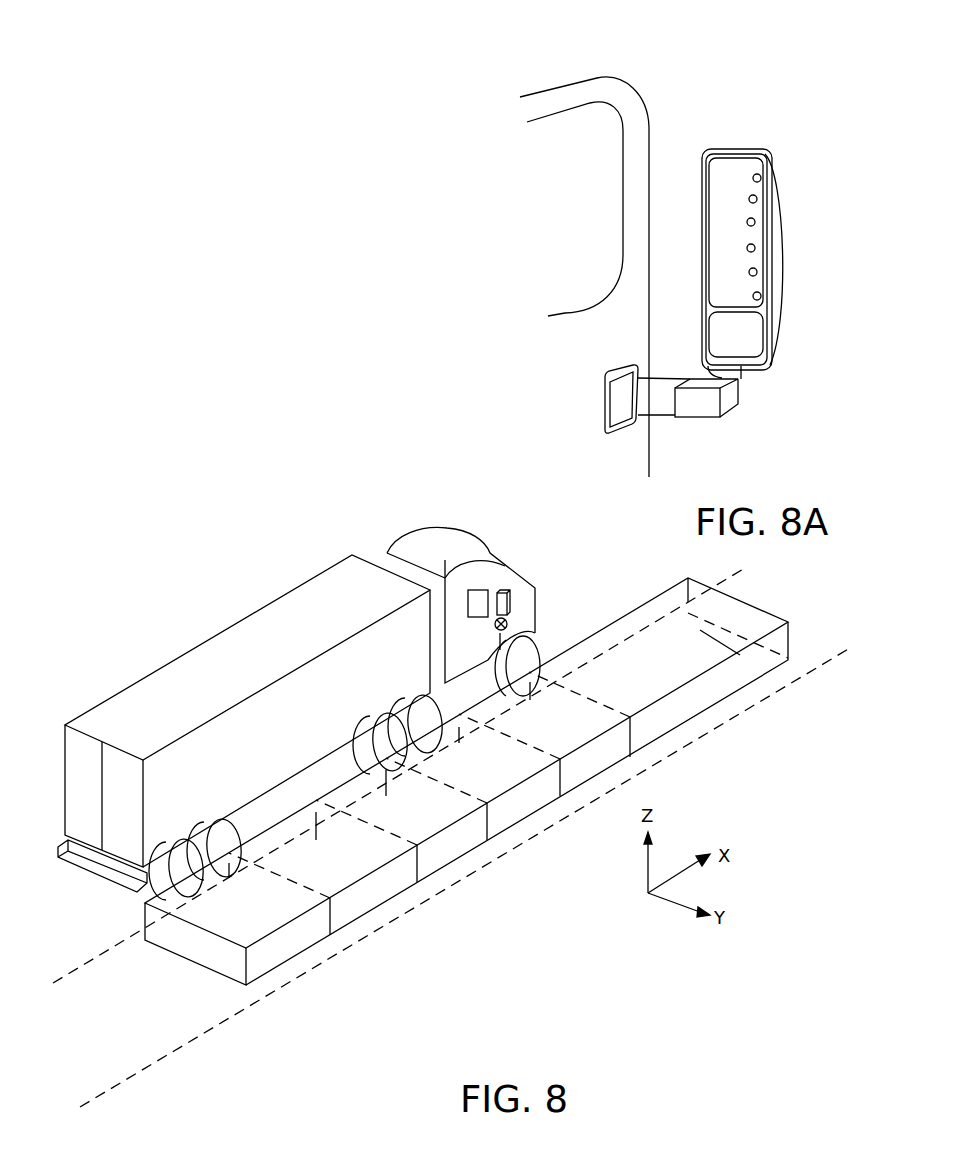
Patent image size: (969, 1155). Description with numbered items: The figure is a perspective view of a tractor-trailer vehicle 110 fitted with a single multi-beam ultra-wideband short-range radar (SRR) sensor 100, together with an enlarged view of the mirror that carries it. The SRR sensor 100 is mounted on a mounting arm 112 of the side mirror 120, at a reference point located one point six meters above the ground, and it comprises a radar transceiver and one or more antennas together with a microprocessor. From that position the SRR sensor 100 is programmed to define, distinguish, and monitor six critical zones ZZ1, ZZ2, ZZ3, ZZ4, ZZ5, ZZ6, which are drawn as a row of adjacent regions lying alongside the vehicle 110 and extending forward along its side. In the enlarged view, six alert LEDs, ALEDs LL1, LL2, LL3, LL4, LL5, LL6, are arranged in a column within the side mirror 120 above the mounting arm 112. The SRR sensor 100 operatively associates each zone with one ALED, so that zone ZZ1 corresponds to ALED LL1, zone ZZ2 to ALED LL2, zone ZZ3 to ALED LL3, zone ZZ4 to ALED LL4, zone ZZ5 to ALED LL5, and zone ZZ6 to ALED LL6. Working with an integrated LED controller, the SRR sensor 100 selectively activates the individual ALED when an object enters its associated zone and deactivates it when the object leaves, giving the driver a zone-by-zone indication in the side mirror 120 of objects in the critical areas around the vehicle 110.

In FIG. 8, the vehicle 110 is at (248, 560).
In FIG. 8, the side mirror 120 is at (498, 590).
In FIG. 8A, the side mirror 120 is at (744, 238).
In FIG. 8, the SRR sensor 100 is at (508, 622).
In FIG. 8A, the SRR sensor 100 is at (693, 417).
In FIG. 8A, the mounting arm 112 is at (665, 385).
In FIG. 8, the zone ZZ1 is at (278, 948).
In FIG. 8, the zone ZZ2 is at (375, 893).
In FIG. 8, the zone ZZ3 is at (470, 840).
In FIG. 8, the zone ZZ4 is at (532, 800).
In FIG. 8, the zone ZZ5 is at (628, 742).
In FIG. 8, the zone ZZ6 is at (733, 688).
In FIG. 8A, the ALED LL1 is at (761, 297).
In FIG. 8A, the ALED LL2 is at (757, 273).
In FIG. 8A, the ALED LL3 is at (755, 248).
In FIG. 8A, the ALED LL4 is at (755, 223).
In FIG. 8A, the ALED LL5 is at (757, 200).
In FIG. 8A, the ALED LL6 is at (761, 174).